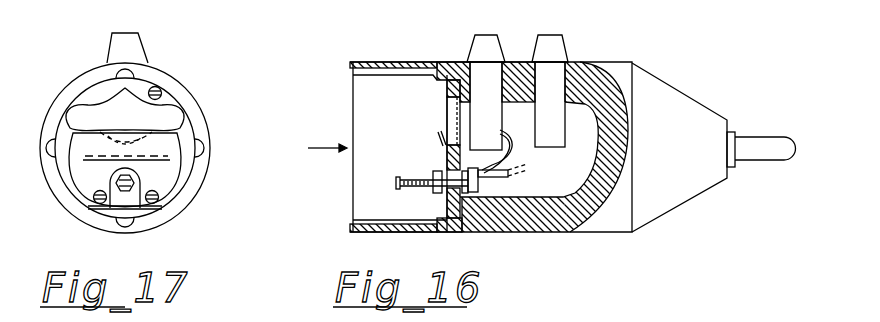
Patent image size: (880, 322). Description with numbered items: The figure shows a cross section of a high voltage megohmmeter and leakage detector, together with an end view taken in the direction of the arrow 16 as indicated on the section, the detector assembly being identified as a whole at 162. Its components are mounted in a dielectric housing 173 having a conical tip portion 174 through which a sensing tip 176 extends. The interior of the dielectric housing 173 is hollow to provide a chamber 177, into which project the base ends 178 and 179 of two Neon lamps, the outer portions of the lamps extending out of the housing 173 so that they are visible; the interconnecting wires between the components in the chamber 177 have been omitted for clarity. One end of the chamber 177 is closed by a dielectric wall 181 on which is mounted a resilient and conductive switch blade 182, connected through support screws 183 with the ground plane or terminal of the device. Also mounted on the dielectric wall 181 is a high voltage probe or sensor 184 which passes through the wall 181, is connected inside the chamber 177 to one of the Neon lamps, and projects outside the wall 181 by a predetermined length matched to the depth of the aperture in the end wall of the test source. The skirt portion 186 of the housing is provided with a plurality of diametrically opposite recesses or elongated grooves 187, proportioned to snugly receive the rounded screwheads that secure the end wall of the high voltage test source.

In FIG. 16, the viewing direction of FIG. 16 is at (302, 150).
In FIG. 16, the connector assembly 162 is at (410, 48).
In FIG. 17, the dielectric housing 173 is at (185, 84).
In FIG. 16, the dielectric housing 173 is at (616, 72).
In FIG. 16, the conical tip portion 174 is at (683, 103).
In FIG. 16, the sensing tip 176 is at (763, 143).
In FIG. 16, the chamber 177 is at (558, 230).
In FIG. 16, the base end of Neon lamp 178 is at (494, 115).
In FIG. 16, the base end of Neon lamp 179 is at (557, 123).
In FIG. 16, the dielectric wall 181 is at (442, 171).
In FIG. 17, the switch blade 182 is at (168, 172).
In FIG. 16, the switch blade 182 is at (443, 147).
In FIG. 17, the support screws 183 is at (153, 202).
In FIG. 16, the high voltage probe or sensor 184 is at (427, 188).
In FIG. 17, the skirt portion 186 is at (88, 90).
In FIG. 16, the skirt portion 186 is at (363, 92).
In FIG. 17, the recesses or elongated grooves 187 is at (45, 148).
In FIG. 16, the recesses or elongated grooves 187 is at (372, 66).